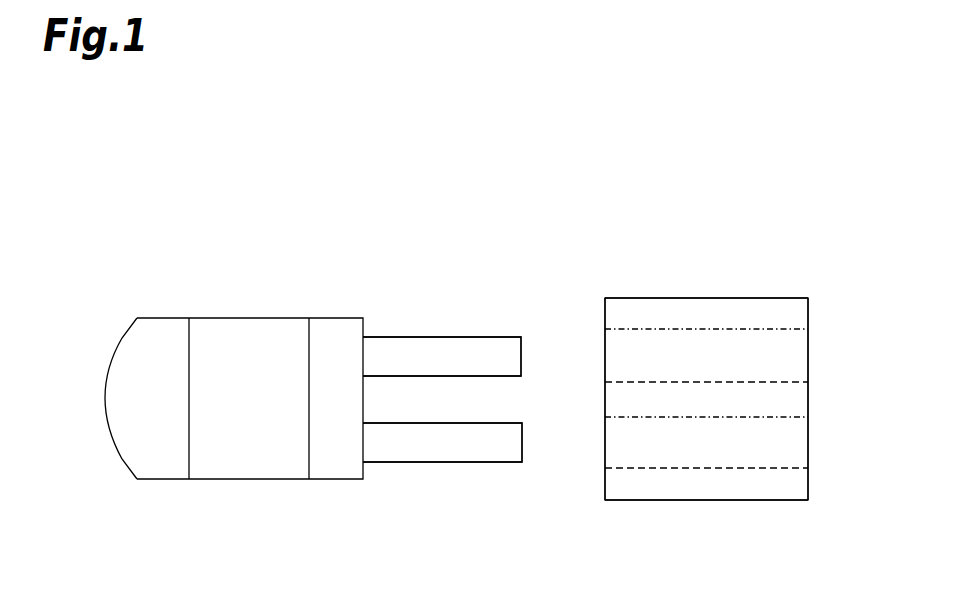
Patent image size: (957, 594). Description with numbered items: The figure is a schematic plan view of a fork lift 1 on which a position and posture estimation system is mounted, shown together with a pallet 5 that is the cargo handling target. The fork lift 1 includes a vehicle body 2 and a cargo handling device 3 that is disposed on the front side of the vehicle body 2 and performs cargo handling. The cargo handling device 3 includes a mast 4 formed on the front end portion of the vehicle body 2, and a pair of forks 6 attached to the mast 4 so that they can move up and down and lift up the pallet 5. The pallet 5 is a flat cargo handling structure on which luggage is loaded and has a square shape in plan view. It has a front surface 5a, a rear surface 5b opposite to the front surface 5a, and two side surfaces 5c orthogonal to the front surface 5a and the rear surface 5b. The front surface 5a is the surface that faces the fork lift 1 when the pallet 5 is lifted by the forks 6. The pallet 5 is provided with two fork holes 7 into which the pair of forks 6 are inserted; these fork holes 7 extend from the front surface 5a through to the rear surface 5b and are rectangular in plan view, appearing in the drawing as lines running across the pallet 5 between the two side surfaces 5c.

The fork lift 1 is at (142, 252).
The vehicle body 2 is at (224, 318).
The cargo handling device 3 is at (405, 337).
The mast 4 is at (317, 357).
The pallet 5 is at (790, 298).
The front surface 5a is at (605, 398).
The rear surface 5b is at (808, 400).
The side surfaces 5c is at (708, 298).
The forks 6 is at (502, 353).
The fork holes 7 is at (620, 358).